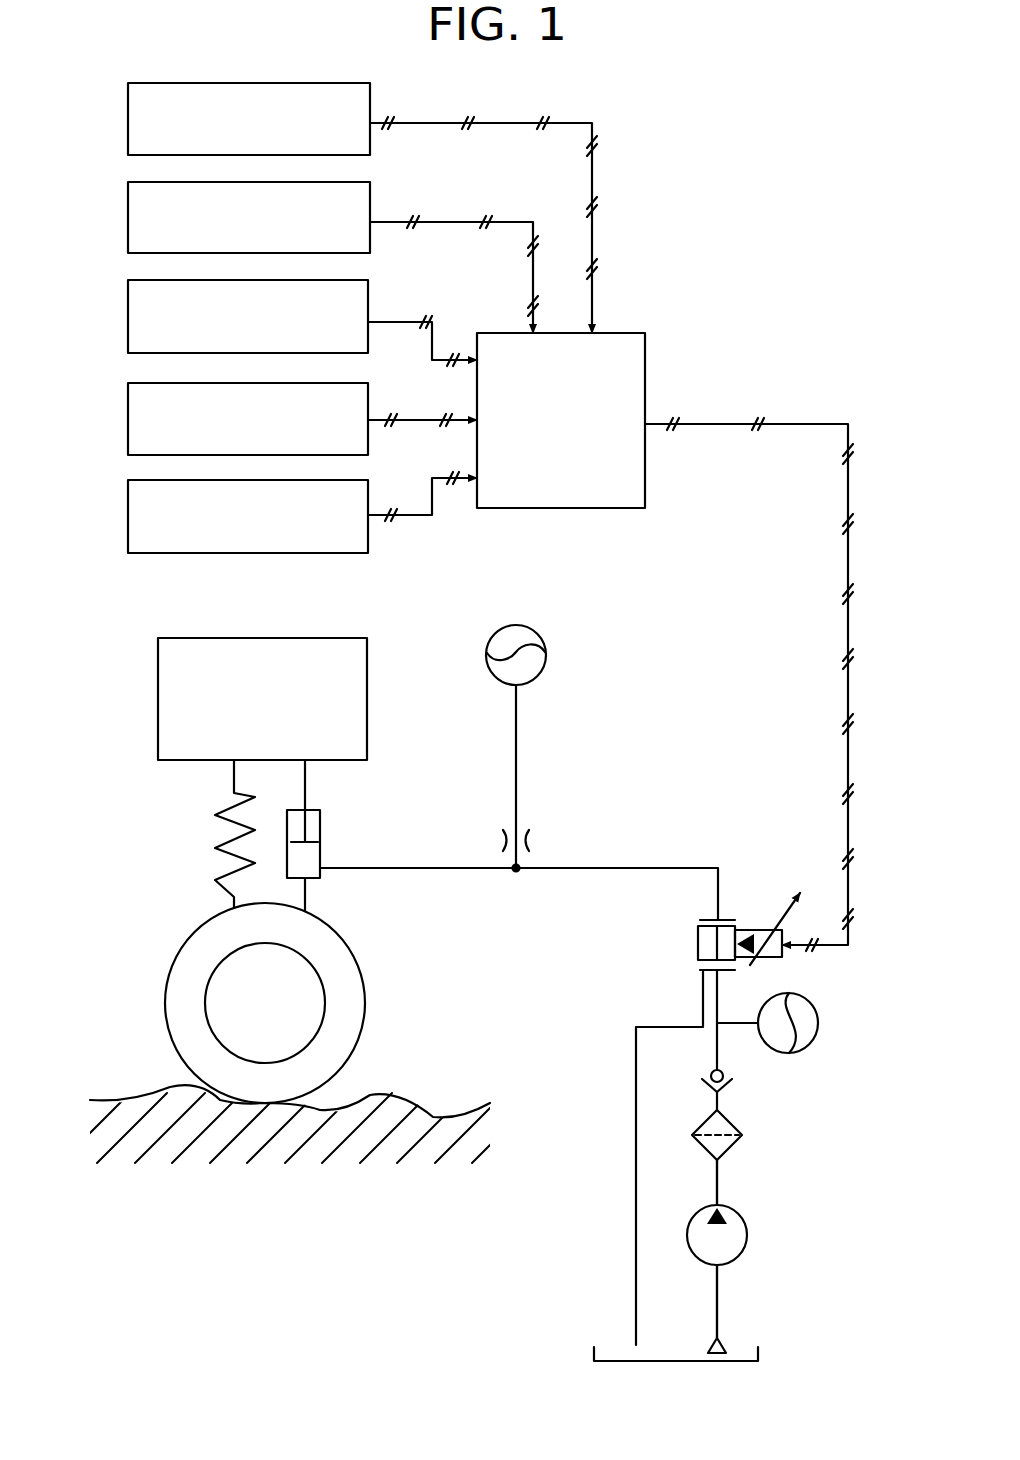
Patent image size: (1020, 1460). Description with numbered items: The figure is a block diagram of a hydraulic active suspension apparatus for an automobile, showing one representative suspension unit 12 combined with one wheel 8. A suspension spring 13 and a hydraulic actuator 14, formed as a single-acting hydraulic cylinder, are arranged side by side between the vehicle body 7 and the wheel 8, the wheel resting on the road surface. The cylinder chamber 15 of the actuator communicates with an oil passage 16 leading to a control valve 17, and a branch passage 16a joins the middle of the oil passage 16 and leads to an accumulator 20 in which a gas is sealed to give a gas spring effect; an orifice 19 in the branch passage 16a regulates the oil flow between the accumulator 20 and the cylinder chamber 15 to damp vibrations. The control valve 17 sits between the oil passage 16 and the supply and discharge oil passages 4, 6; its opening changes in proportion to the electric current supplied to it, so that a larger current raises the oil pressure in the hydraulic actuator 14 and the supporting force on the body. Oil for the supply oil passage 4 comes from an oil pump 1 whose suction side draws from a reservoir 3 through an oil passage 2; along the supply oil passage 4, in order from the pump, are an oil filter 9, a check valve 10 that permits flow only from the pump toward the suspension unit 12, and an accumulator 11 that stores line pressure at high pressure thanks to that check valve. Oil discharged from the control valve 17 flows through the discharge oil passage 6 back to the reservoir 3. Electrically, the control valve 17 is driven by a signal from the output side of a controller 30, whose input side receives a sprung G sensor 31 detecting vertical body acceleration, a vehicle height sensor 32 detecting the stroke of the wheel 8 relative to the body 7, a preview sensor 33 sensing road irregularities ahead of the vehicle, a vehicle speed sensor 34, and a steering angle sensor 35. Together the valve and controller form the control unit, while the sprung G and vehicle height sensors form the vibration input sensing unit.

The oil pump 1 is at (746, 1237).
The oil passage 2 is at (717, 1285).
The reservoir 3 is at (758, 1352).
The supply oil passage 4 is at (717, 1175).
The discharge oil passage 6 is at (636, 1143).
The vehicle body 7 is at (158, 660).
The wheel 8 is at (200, 925).
The oil filter 9 is at (740, 1128).
The check valve 10 is at (728, 1080).
The accumulator 11 is at (806, 1048).
The suspension unit 12 is at (503, 918).
The suspension spring 13 is at (220, 855).
The hydraulic actuator 14 is at (320, 878).
The cylinder chamber 15 is at (310, 858).
The oil passage 16 is at (622, 873).
The branch passage 16a is at (516, 748).
The control valve 17 is at (785, 955).
The orifice 19 is at (535, 840).
The accumulator 20 is at (537, 678).
The controller 30 is at (648, 360).
The sprung G sensor 31 is at (128, 500).
The vehicle height sensor 32 is at (128, 405).
The preview sensor 33 is at (128, 303).
The vehicle speed sensor 34 is at (128, 206).
The steering angle sensor 35 is at (128, 106).